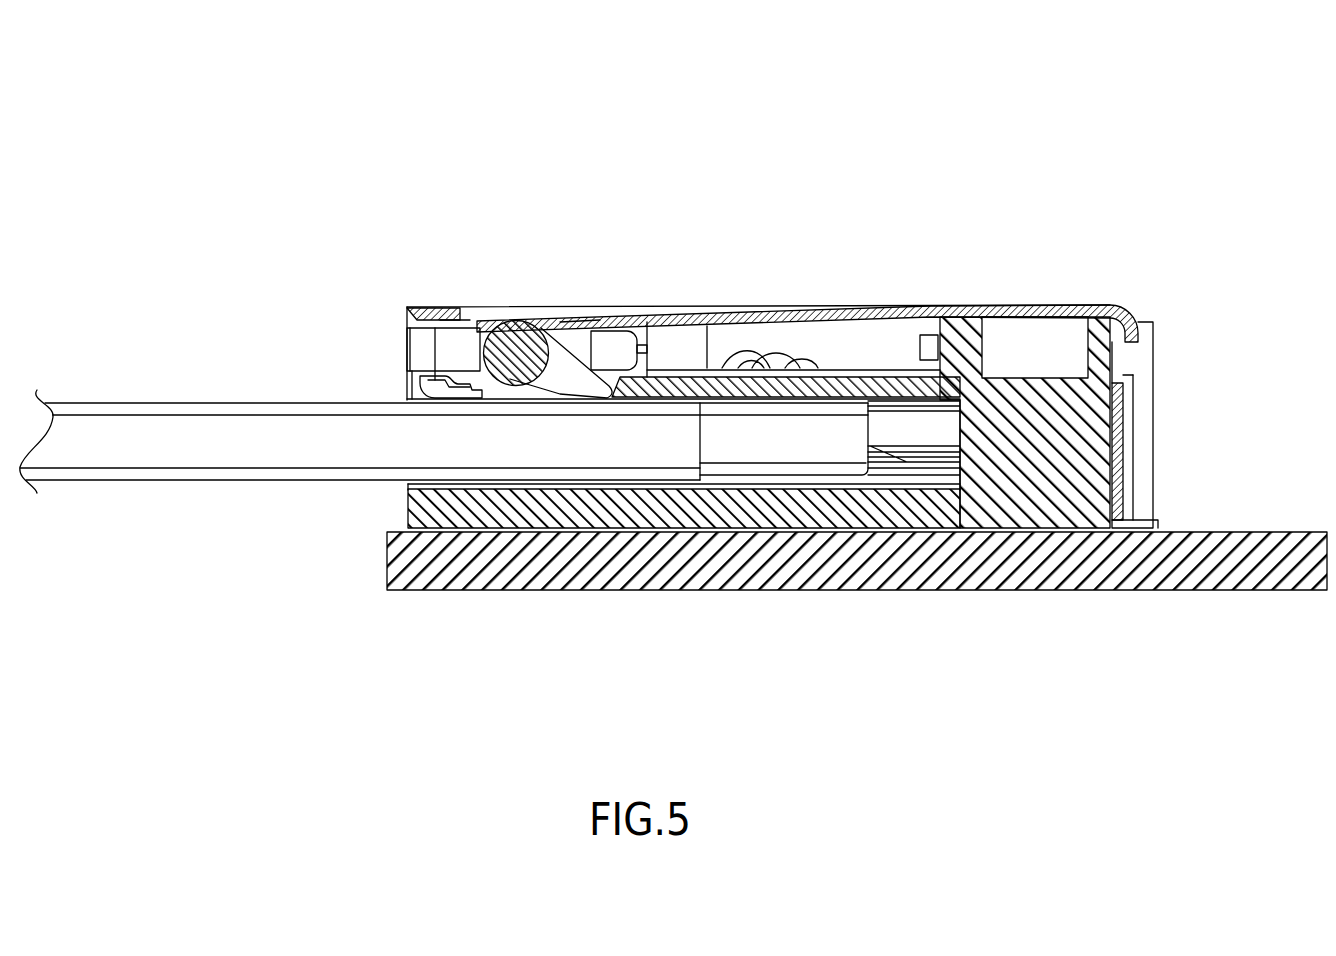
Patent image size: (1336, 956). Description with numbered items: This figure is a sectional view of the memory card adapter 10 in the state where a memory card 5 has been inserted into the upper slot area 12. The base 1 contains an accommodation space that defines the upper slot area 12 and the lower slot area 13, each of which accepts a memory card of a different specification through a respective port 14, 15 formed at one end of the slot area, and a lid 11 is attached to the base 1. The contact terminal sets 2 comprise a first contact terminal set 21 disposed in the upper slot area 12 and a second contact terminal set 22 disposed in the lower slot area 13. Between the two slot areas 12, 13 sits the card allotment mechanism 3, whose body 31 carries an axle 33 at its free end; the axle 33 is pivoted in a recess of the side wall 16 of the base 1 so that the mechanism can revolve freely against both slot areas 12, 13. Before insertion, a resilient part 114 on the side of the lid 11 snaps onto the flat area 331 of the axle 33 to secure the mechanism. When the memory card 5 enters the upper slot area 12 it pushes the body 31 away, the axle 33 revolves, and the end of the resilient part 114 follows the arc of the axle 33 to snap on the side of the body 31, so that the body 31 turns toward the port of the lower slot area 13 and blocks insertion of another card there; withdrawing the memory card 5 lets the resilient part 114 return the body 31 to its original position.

The memory card adapter 10 is at (1136, 92).
The base 1 is at (1178, 352).
The lid 11 is at (1020, 305).
The resilient part 114 is at (593, 320).
The upper slot area 12 is at (655, 533).
The lower slot area 13 is at (831, 333).
The port 14 is at (407, 486).
The port 15 is at (685, 343).
The side wall 16 is at (407, 312).
The contact terminal set 2 is at (753, 330).
The first contact terminal set 21 is at (568, 530).
The second contact terminal set 22 is at (773, 354).
The card allotment mechanism 3 is at (560, 316).
The body 31 is at (535, 395).
The axle 33 is at (510, 320).
The flat area 331 is at (467, 311).
The memory card 5 is at (164, 420).